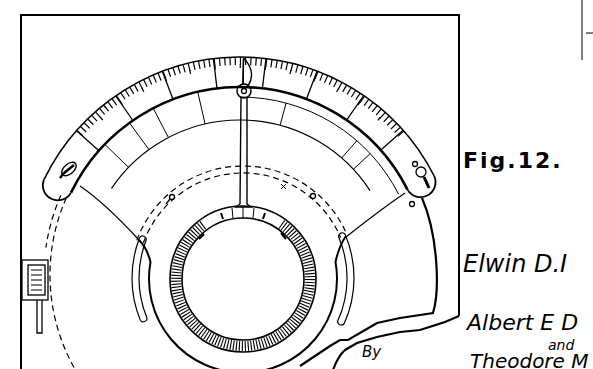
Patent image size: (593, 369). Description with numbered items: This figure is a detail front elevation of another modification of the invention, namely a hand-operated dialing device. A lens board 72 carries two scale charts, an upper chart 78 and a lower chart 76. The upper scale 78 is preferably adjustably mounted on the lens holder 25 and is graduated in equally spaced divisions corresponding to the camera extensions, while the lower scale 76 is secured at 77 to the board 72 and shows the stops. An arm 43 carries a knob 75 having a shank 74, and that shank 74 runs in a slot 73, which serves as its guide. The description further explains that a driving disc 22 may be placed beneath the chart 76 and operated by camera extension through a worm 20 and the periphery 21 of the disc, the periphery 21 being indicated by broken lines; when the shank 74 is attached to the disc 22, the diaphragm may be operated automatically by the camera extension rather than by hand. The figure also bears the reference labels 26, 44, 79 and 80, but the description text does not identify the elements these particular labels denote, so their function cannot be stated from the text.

The worm 20 is at (50, 282).
The periphery 21 is at (52, 228).
The driving disc 22 is at (70, 350).
The lens holder 25 is at (298, 304).
The disk 26 is at (268, 276).
The arm 43 is at (249, 190).
The index pointer 44 is at (246, 58).
The lens board 72 is at (456, 53).
The slot 73 is at (411, 208).
The shank 74 is at (240, 99).
The knob 75 is at (249, 100).
The scale chart 76 is at (330, 266).
The securing point 77 is at (316, 196).
The scale chart 78 is at (412, 142).
The knob 79 is at (425, 169).
The end cap 80 is at (416, 195).